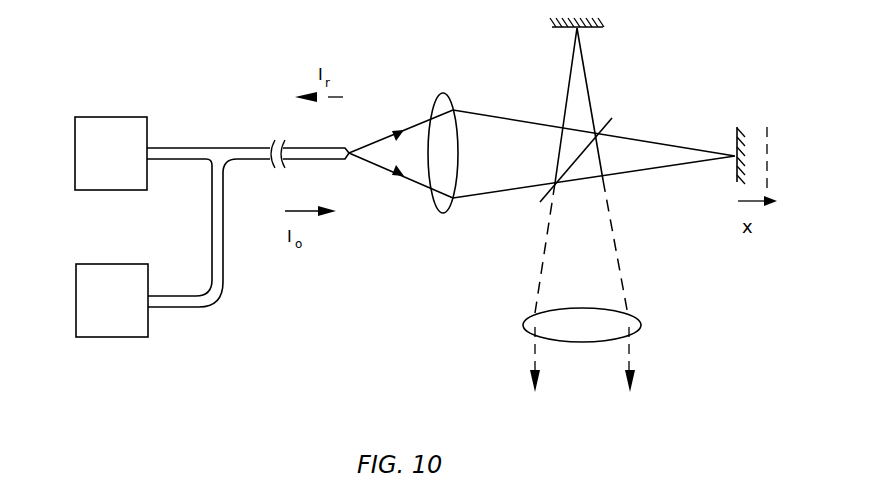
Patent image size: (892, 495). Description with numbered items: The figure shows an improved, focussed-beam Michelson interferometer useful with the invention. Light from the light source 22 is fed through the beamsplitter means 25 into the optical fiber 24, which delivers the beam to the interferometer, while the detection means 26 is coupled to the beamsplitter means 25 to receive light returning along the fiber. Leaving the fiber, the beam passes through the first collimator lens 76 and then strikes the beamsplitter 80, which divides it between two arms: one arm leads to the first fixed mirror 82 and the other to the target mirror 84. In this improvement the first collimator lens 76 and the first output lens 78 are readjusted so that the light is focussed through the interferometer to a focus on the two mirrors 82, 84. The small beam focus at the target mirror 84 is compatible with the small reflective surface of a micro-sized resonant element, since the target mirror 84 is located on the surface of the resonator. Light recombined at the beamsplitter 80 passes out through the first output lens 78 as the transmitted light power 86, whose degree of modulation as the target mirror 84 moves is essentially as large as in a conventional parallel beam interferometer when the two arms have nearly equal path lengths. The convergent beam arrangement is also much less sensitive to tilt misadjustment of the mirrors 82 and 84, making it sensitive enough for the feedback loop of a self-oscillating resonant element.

The light source 22 is at (107, 117).
The detection means 26 is at (100, 264).
The beamsplitter means 25 is at (233, 139).
The optical fiber 24 is at (316, 172).
The first collimator lens 76 is at (453, 200).
The beamsplitter 80 is at (612, 118).
The first fixed mirror 82 is at (595, 28).
The target mirror 84 is at (737, 134).
The first output lens 78 is at (528, 318).
The modulated light power 86 is at (582, 369).